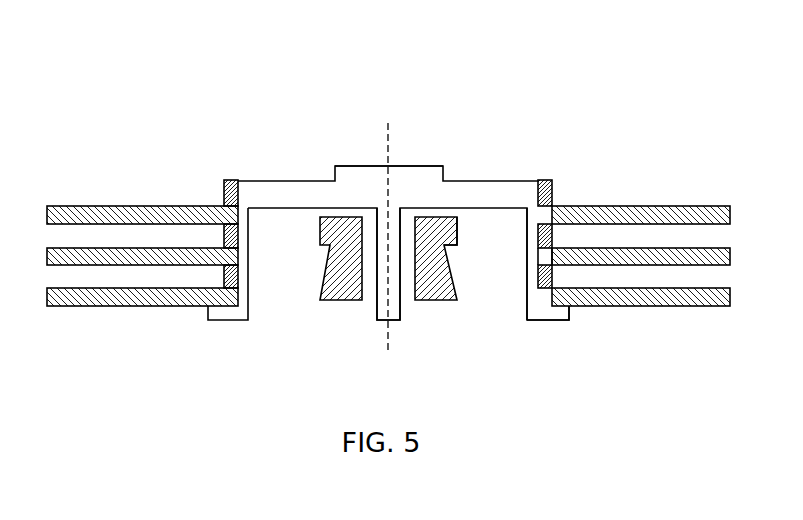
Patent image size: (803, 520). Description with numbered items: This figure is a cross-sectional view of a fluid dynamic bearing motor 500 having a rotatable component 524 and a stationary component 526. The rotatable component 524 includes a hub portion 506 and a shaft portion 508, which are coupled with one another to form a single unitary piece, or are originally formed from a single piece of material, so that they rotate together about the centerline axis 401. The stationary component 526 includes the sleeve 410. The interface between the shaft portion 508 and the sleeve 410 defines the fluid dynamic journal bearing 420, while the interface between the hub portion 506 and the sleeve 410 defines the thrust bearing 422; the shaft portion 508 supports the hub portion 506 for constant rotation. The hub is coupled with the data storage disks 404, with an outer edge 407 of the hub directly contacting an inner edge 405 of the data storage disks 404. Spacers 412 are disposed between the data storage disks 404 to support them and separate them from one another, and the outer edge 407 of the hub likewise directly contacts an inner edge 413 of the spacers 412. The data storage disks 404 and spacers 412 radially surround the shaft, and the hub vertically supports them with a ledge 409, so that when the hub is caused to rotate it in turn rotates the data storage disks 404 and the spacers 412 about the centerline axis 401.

The fluid dynamic bearing motor 500 is at (158, 81).
The centerline axis 401 is at (387, 133).
The data storage disks 404 is at (47, 213).
The inner edge of the data storage disks 405 is at (537, 252).
The outer edge of the hub 407 is at (538, 253).
The ledge 409 is at (562, 312).
The sleeve 410 is at (457, 238).
The spacers 412 is at (222, 193).
The inner edge of the spacers 413 is at (536, 234).
The fluid dynamic journal bearing 420 is at (367, 301).
The thrust bearing 422 is at (314, 212).
The hub portion 506 is at (457, 181).
The shaft portion 508 is at (380, 167).
The rotatable component 524 is at (417, 167).
The stationary component 526 is at (457, 242).